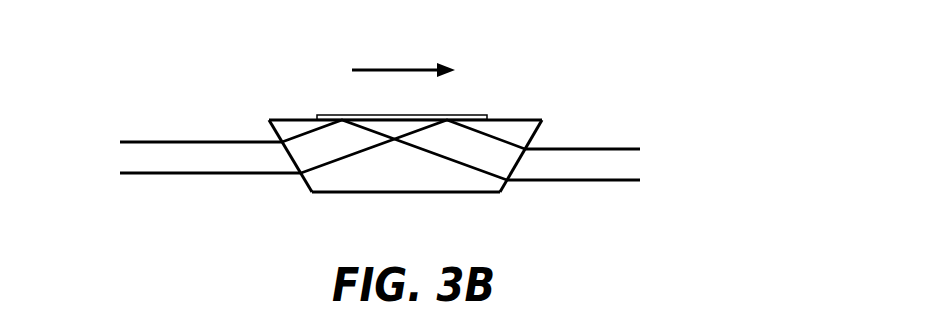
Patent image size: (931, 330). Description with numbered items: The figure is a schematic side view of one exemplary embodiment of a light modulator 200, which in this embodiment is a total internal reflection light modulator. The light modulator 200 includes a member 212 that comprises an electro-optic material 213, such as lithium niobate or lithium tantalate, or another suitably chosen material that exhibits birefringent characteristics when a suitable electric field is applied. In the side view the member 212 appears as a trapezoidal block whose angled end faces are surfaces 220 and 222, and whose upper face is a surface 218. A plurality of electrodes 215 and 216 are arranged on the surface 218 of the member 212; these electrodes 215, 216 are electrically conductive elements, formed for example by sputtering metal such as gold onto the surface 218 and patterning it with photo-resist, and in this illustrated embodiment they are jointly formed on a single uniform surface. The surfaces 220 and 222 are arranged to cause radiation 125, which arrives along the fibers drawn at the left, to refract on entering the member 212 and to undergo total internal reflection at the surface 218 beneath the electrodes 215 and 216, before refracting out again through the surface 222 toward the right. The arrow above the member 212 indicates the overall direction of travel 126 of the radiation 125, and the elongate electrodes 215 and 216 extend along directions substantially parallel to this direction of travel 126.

The radiation 125 is at (198, 160).
The overall direction of travel 126 is at (395, 69).
The light modulator 200 is at (412, 139).
The member 212 is at (444, 193).
The electro-optic material 213 is at (347, 173).
The electrode 215 is at (336, 80).
The electrode 216 is at (328, 115).
The surface 218 is at (298, 119).
The surface 220 is at (302, 186).
The surface 222 is at (501, 188).